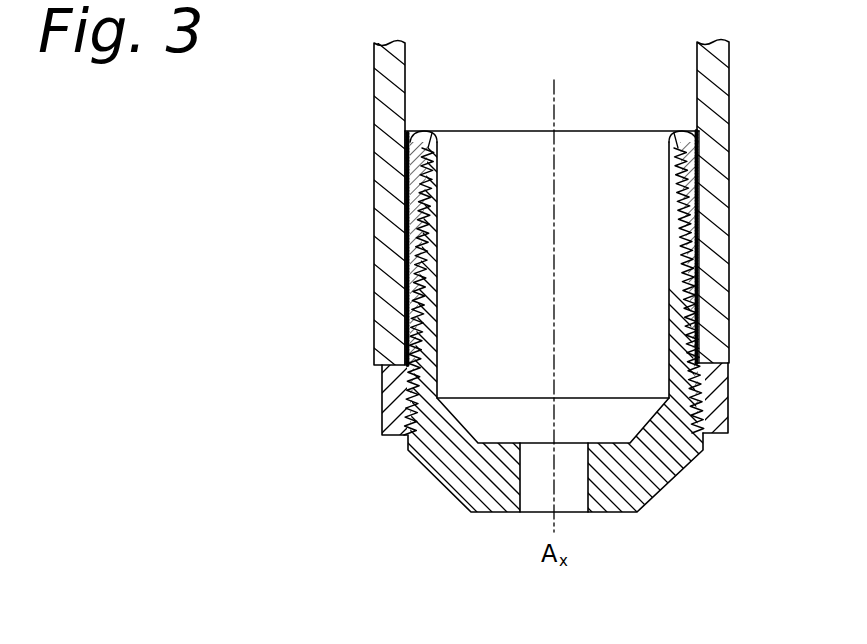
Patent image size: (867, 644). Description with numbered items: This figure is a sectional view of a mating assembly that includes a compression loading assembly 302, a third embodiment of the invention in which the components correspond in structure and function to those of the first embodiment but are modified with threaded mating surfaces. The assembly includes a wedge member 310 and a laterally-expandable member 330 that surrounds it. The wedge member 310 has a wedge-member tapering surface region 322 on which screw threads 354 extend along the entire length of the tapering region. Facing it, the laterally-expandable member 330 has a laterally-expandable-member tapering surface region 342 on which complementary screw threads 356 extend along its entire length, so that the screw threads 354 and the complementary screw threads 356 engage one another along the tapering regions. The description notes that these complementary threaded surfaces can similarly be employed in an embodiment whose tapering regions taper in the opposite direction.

The compression loading assembly 302 is at (720, 457).
The wedge member 310 is at (409, 455).
The wedge-member tapering surface region 322 is at (554, 291).
The laterally-expandable member 330 is at (392, 428).
The laterally-expandable-member tapering surface region 342 is at (473, 283).
The screw threads 354 is at (421, 301).
The complementary screw threads 356 is at (420, 266).